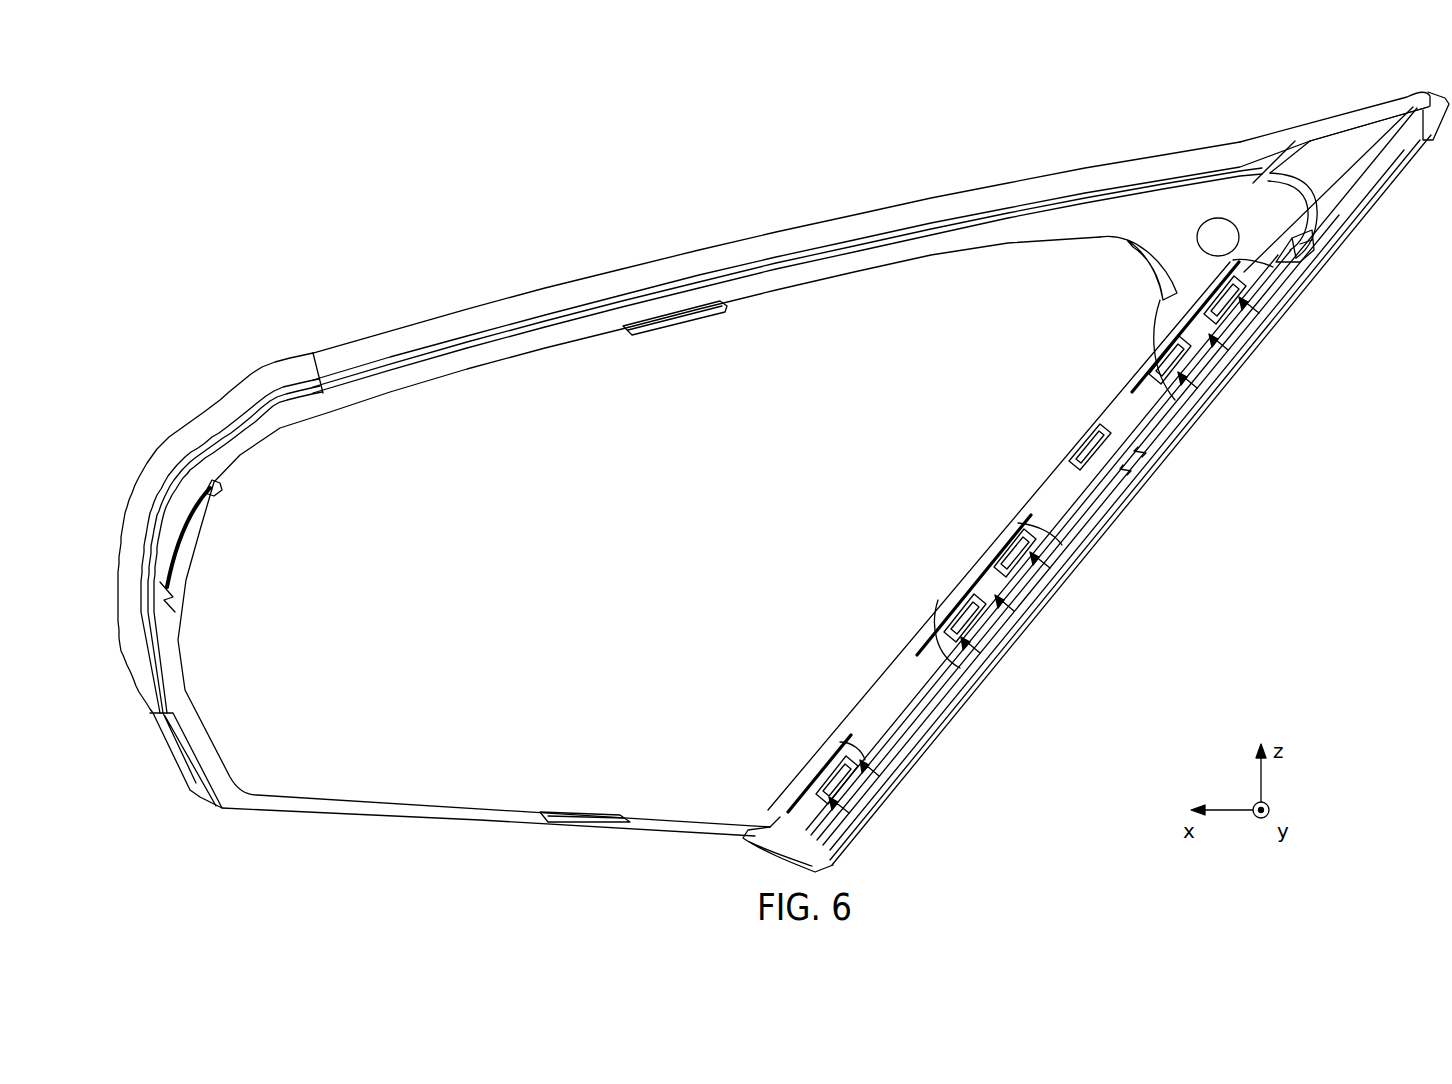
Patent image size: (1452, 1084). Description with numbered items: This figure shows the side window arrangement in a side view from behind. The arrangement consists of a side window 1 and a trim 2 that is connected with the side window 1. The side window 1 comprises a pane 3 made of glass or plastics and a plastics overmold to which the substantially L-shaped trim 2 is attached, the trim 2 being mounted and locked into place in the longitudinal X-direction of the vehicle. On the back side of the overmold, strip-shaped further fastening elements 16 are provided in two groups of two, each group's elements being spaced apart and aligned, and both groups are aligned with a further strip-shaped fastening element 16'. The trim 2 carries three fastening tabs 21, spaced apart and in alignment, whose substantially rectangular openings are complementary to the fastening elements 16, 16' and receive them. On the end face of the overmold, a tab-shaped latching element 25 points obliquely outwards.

The side window 1 is at (692, 175).
The trim 2 is at (1155, 567).
The pane 3 is at (517, 385).
The further fastening elements 16 is at (1079, 459).
The further fastening element 16' is at (818, 776).
The fastening tabs 21 is at (1193, 326).
The latching element 25 is at (1299, 262).